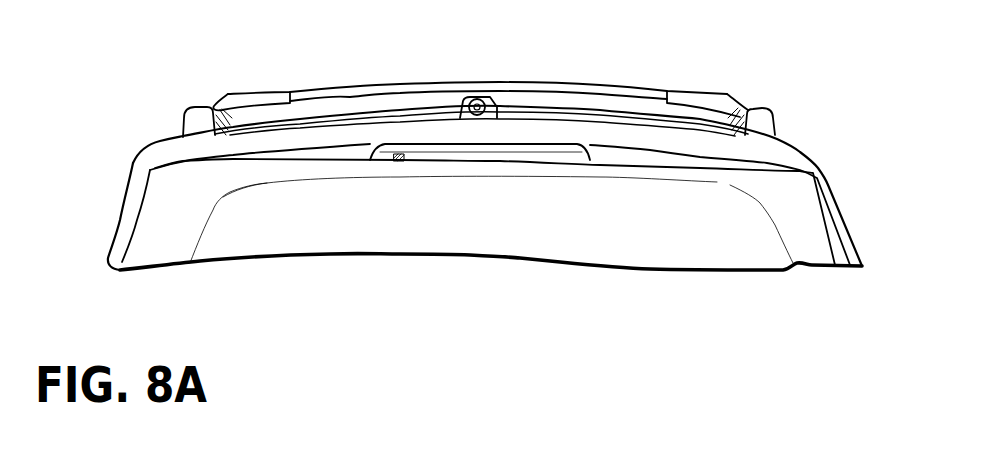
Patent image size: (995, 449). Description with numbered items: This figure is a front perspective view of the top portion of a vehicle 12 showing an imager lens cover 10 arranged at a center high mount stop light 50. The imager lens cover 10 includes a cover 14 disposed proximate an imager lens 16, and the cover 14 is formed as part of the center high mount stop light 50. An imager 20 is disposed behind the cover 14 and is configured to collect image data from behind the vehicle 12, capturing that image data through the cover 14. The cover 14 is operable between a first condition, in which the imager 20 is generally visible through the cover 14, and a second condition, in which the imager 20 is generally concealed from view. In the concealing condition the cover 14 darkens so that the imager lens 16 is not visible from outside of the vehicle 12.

The imager lens cover 10 is at (385, 74).
The vehicle 12 is at (782, 155).
The cover 14 is at (401, 162).
The imager lens 16 is at (397, 162).
The imager 20 is at (400, 154).
The center high mount stop light 50 is at (519, 152).